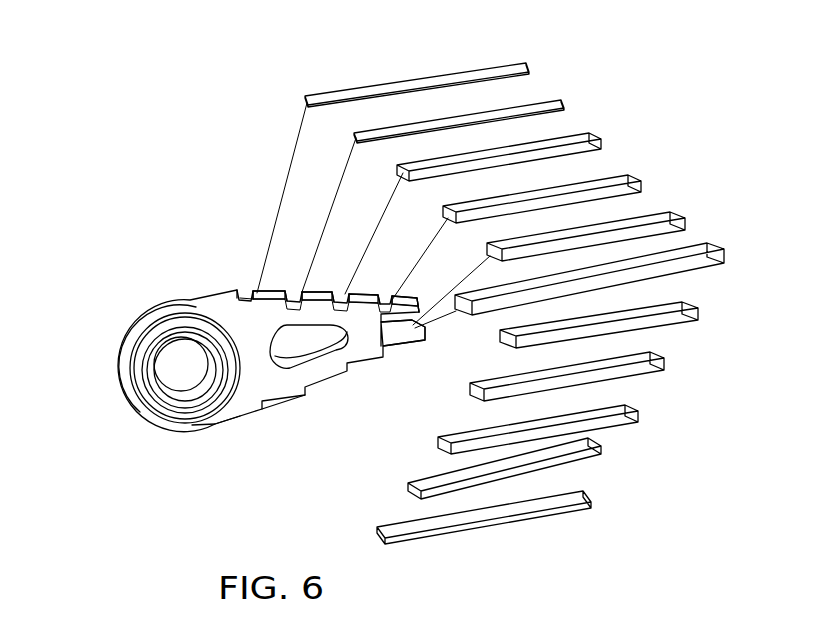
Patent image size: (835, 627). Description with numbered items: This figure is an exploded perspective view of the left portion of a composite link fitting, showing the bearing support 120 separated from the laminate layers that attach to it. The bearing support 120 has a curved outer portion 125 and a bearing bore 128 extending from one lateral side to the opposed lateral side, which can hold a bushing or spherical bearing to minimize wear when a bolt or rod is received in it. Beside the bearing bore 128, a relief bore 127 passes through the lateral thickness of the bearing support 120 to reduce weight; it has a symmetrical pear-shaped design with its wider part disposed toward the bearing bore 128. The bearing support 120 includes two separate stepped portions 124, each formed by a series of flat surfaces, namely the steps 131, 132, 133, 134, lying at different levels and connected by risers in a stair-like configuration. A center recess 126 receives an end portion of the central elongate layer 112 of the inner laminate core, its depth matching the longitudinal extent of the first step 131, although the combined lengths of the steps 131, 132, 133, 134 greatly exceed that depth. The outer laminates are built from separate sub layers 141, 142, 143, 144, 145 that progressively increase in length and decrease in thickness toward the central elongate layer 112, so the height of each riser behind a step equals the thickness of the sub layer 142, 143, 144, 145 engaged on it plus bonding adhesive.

The central elongate layer 112 is at (714, 258).
The bearing support 120 is at (245, 323).
The stepped portion 124 is at (280, 424).
The curved outer portion 125 is at (120, 348).
The center recess 126 is at (413, 327).
The relief bore 127 is at (308, 350).
The bearing bore 128 is at (208, 417).
The first step 131 is at (392, 300).
The step 132 is at (345, 294).
The step 133 is at (302, 292).
The step 134 is at (257, 293).
The sub layer 141 is at (671, 222).
The sub layer 142 is at (632, 180).
The sub layer 143 is at (592, 138).
The sub layer 144 is at (562, 104).
The sub layer 145 is at (527, 67).